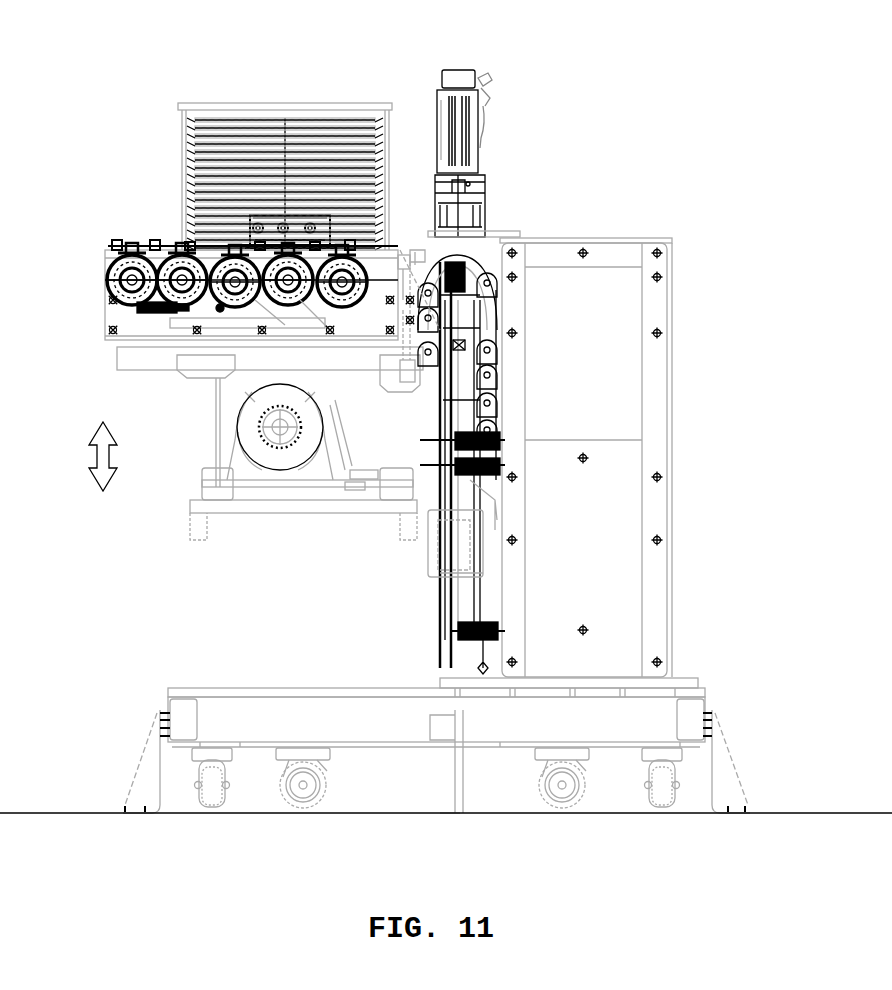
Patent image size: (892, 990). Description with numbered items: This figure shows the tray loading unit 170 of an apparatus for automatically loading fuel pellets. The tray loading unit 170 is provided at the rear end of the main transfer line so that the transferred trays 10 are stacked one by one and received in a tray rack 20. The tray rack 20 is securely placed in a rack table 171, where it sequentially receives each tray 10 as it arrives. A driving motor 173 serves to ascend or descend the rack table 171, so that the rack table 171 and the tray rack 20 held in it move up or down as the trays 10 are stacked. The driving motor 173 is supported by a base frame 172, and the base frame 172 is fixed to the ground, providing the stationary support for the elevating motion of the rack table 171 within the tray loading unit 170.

The tray 10 is at (208, 124).
The tray rack 20 is at (233, 108).
The tray loading unit 170 is at (446, 408).
The rack table 171 is at (141, 245).
The base frame 172 is at (655, 560).
The driving motor 173 is at (465, 77).